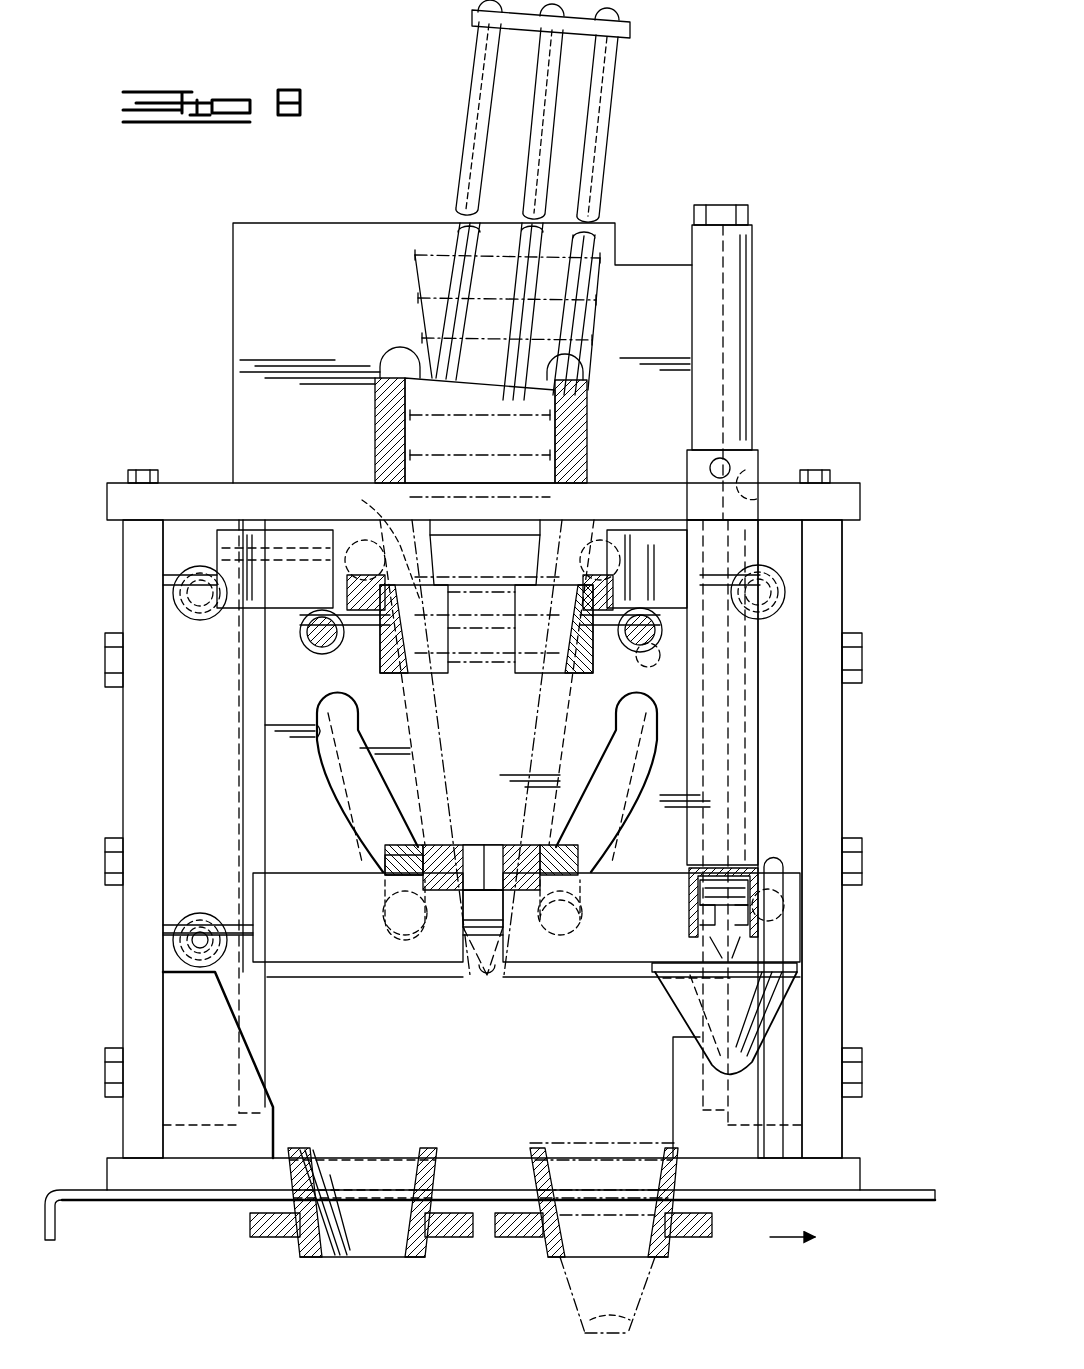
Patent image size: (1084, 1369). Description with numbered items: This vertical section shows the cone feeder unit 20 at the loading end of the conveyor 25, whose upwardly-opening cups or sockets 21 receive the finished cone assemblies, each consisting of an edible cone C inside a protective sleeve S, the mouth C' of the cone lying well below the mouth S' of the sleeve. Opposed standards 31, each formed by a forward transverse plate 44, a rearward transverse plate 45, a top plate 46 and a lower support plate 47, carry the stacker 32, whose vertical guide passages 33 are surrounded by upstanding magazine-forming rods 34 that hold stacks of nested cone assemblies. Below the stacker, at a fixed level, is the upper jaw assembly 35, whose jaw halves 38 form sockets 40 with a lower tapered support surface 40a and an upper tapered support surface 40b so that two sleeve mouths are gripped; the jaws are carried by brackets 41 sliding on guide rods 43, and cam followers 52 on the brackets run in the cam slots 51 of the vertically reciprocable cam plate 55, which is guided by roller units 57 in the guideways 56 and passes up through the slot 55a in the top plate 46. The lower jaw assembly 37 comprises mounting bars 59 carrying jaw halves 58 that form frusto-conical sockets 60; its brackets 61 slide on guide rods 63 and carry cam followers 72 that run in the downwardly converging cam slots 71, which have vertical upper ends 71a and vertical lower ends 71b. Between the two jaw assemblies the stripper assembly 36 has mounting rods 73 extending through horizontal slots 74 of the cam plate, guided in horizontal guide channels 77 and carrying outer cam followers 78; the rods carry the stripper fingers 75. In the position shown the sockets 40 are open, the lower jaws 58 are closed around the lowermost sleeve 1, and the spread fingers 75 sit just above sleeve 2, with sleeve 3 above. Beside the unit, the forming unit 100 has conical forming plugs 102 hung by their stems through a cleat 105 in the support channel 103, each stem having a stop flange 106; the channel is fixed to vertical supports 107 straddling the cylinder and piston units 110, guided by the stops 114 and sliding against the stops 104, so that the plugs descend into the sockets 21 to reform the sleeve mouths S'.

The magazine-forming rods 34 is at (595, 138).
The unit 20 is at (772, 440).
The cam plate 55 is at (465, 345).
The cylinder and piston units 110 is at (745, 323).
The slot 55a is at (752, 470).
The cone assembly guide passages 33 is at (478, 400).
The cam slots 51 is at (400, 352).
The stacker 32 is at (594, 437).
The top plate 46 is at (190, 495).
The forward transverse plate 44 is at (128, 715).
The guideways 56 is at (190, 770).
The rearward transverse plate 45 is at (845, 770).
The standards 31 is at (860, 555).
The vertical supports 107 is at (750, 775).
The mounting bracket 41 is at (268, 528).
The roller units 57 is at (200, 620).
The guide rods 63 is at (195, 940).
The cam followers 78 is at (312, 660).
The support and guide rod 43 is at (450, 545).
The cam followers 52 is at (345, 572).
The tapered support surface 40b is at (371, 544).
The stripper fingers 75 is at (322, 612).
The mounting rods 73 is at (330, 655).
The horizontal slots 74 is at (380, 660).
The upper jaw assembly 35 is at (630, 582).
The intermediate stripper assembly 36 is at (648, 662).
The socket 40 is at (522, 588).
The jaw halves 38 is at (436, 674).
The tapered support surface 40a is at (525, 674).
The sleeve 3 is at (481, 601).
The sleeve 2 is at (481, 635).
The lowermost sleeve 1 is at (481, 670).
The cam slots 71 is at (335, 780).
The vertical upper ends 71a is at (320, 740).
The horizontal guide channels 77 is at (405, 722).
The lower jaw assembly 37 is at (592, 848).
The mounting bars 59 is at (378, 868).
The jaw halves 58 is at (440, 845).
The socket 60 is at (515, 860).
The brackets 61 is at (322, 977).
The cam followers 72 is at (410, 932).
The vertical lower ends 71b is at (385, 900).
The stop flange 106 is at (692, 885).
The stops 104 is at (770, 912).
The cleat 105 is at (695, 935).
The support channel 103 is at (736, 862).
The forming unit 100 is at (812, 968).
The forming plugs 102 is at (700, 1045).
The stops 114 is at (673, 1037).
The lower support plate 47 is at (862, 1172).
The cone-receiving sockets 21 is at (535, 1148).
The mouth of sleeve S' is at (604, 1183).
The protective sleeve S is at (630, 1295).
The edible cone C is at (635, 1306).
The mouth of cone C' is at (607, 1223).
The conveyor 25 is at (745, 1247).